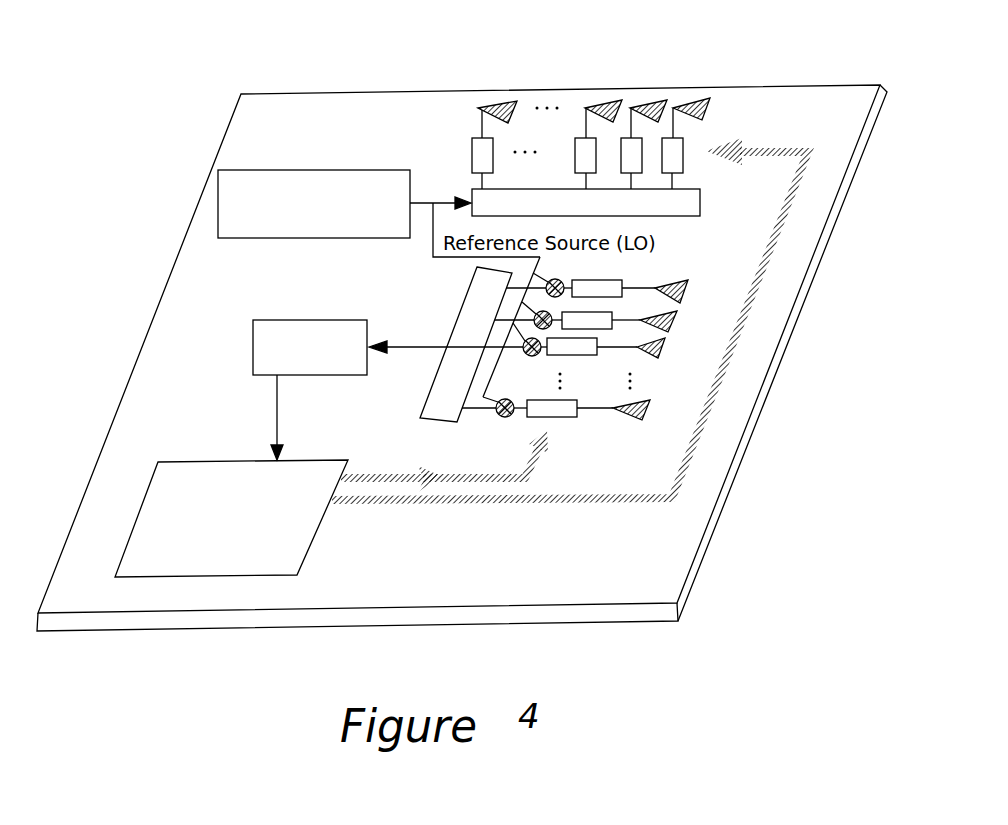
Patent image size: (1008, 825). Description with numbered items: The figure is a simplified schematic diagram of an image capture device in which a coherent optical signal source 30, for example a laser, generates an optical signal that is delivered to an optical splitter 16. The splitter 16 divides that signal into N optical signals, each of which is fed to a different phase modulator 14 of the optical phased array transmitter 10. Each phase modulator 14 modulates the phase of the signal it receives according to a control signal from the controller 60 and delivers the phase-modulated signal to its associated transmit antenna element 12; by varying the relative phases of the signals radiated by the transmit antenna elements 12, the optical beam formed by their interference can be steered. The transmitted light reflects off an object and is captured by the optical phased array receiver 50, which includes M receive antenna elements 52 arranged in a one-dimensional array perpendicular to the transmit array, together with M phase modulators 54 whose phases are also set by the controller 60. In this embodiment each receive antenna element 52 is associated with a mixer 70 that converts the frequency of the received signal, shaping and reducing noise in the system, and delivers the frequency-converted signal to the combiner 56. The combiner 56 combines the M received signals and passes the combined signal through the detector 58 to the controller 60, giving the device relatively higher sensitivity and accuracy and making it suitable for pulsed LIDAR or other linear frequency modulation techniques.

The optical phased array transmitter 10 is at (720, 63).
The transmit antenna elements 12 is at (510, 118).
The phase modulators 14 is at (494, 160).
The optical splitter 16 is at (701, 192).
The coherent optical signal source 30 is at (287, 170).
The optical phased array receiver 50 is at (668, 410).
The receive antenna elements 52 is at (664, 279).
The phase modulators 54 is at (587, 280).
The combiner 56 is at (430, 390).
The detector 58 is at (307, 320).
The controller 60 is at (258, 558).
The mixers 70 is at (548, 280).